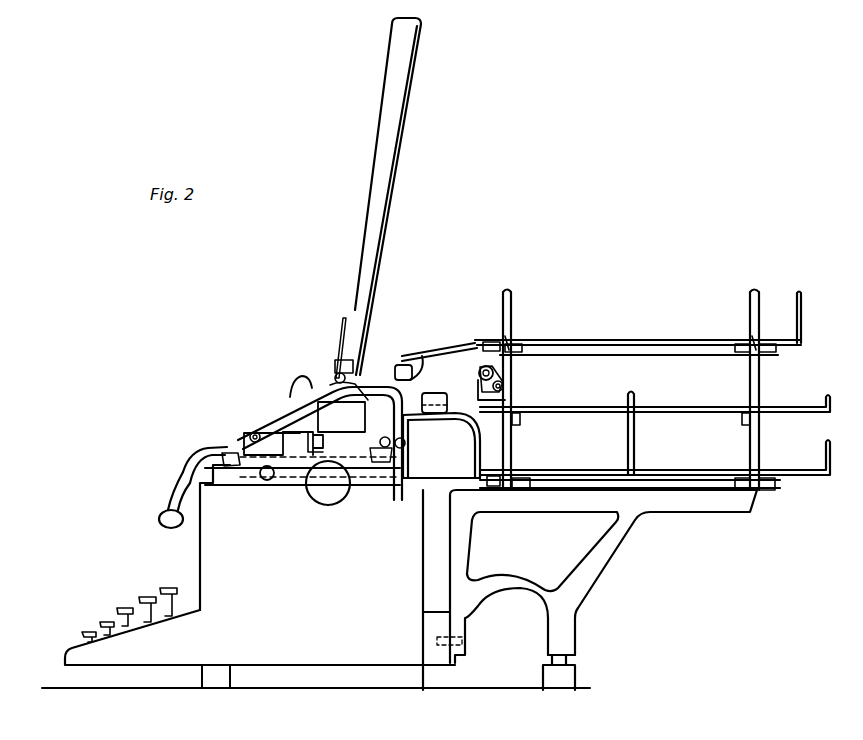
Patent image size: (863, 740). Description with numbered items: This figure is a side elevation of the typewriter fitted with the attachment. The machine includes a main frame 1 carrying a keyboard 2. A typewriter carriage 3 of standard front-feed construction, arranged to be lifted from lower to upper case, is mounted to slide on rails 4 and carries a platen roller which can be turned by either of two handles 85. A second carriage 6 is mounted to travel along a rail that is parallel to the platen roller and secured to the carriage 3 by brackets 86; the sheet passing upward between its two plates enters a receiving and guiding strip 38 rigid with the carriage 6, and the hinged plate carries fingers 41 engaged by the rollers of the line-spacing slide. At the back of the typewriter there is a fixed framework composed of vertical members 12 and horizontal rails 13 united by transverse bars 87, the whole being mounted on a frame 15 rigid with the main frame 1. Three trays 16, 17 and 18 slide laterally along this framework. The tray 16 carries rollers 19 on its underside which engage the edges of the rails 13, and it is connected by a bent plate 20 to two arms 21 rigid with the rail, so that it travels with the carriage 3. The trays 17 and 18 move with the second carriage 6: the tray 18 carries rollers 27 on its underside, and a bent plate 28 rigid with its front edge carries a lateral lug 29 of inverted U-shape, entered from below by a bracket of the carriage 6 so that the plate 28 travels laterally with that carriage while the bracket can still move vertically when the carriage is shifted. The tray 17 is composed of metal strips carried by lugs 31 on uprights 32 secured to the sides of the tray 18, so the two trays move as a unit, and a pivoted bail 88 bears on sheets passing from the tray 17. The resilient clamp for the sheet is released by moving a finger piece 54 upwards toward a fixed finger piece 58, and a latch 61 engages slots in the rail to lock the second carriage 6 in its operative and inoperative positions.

The main frame 1 is at (201, 491).
The keyboard 2 is at (124, 608).
The typewriter carriage 3 is at (240, 480).
The rails 4 is at (215, 468).
The second carriage 6 is at (303, 382).
The vertical members 12 is at (511, 316).
The horizontal rails 13 is at (511, 343).
The frame 15 is at (556, 507).
The tray 16 is at (610, 338).
The tray 17 is at (578, 408).
The tray 18 is at (577, 471).
The rollers 19 is at (490, 352).
The bent plate 20 is at (455, 347).
The arms 21 is at (398, 374).
The rollers 27 is at (498, 487).
The bent plate 28 is at (470, 424).
The lateral lug 29 is at (436, 394).
The lugs 31 is at (520, 420).
The uprights 32 is at (634, 441).
The receiving and guiding strip 38 is at (397, 142).
The fingers 41 is at (338, 328).
The finger piece 54 is at (286, 404).
The fixed finger piece 58 is at (309, 396).
The latch 61 is at (328, 386).
The handles 85 is at (328, 500).
The brackets 86 is at (290, 428).
The transverse bars 87 is at (688, 355).
The pivoted bail 88 is at (478, 381).